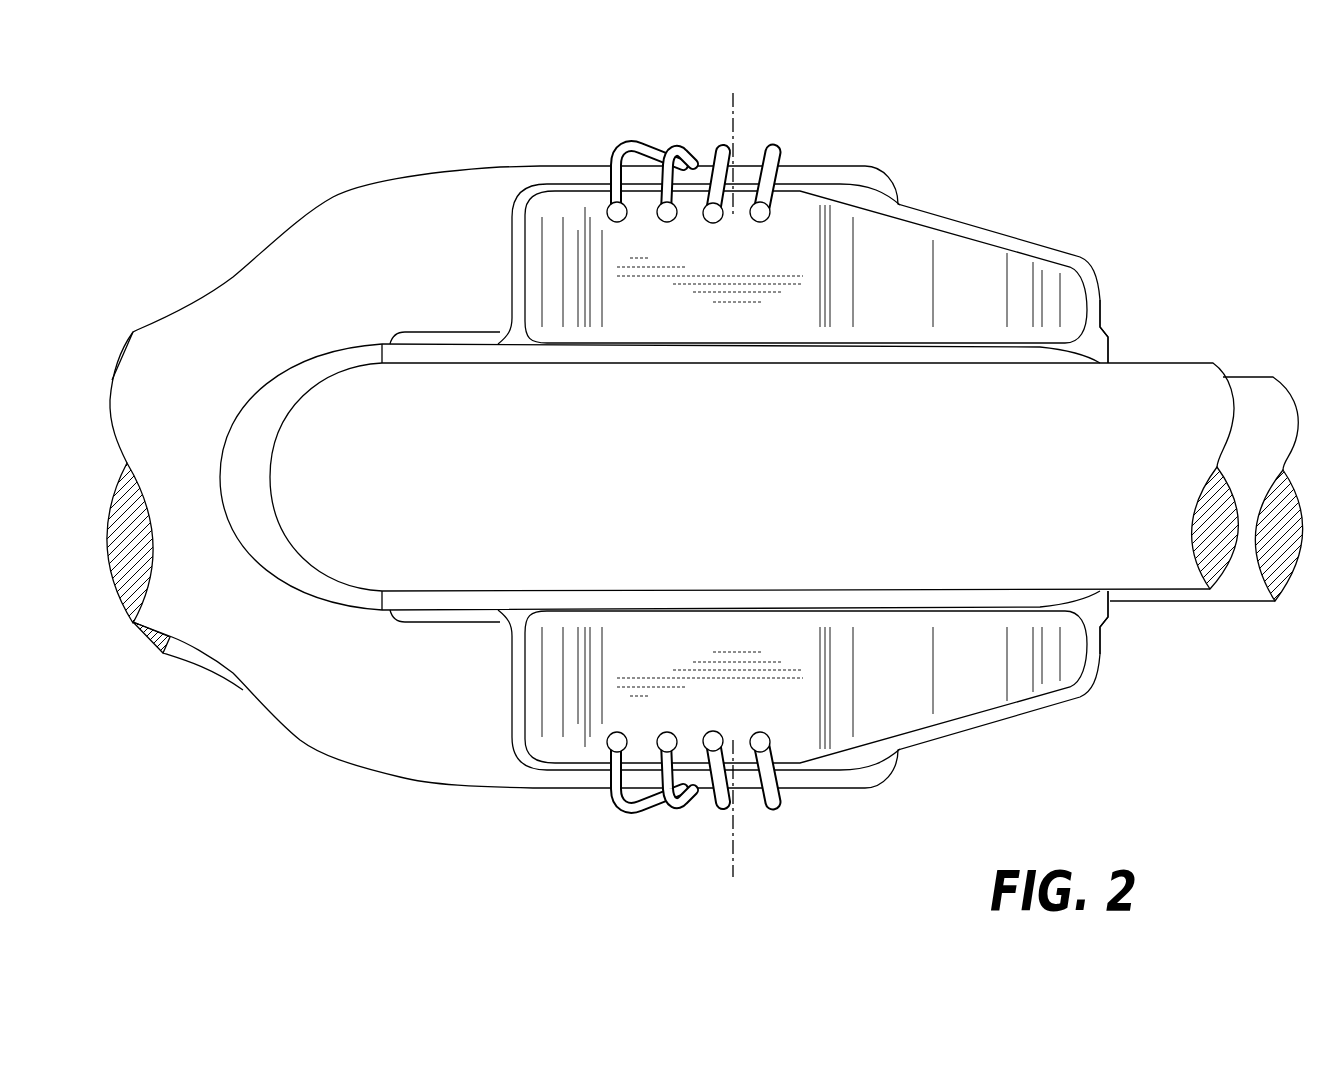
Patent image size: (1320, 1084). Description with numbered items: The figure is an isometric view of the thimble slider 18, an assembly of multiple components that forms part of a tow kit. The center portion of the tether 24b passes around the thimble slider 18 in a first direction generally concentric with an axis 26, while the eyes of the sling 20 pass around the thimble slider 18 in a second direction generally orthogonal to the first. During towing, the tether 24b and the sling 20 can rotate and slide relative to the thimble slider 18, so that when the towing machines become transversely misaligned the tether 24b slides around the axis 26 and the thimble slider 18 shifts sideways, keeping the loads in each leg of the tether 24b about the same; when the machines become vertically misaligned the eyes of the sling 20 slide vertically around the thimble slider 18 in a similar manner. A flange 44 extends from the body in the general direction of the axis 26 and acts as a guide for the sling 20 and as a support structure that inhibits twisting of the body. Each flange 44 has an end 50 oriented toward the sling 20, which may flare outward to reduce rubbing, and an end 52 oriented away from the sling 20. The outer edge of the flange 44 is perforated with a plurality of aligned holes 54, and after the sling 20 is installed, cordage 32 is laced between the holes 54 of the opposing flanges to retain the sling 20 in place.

The thimble slider 18 is at (1086, 195).
The sling 20 is at (396, 249).
The tether 24b is at (1162, 432).
The axis 26 is at (735, 112).
The cordage 32 is at (652, 150).
The flange 44 is at (977, 253).
The end 50 is at (513, 285).
The end 52 is at (1102, 303).
The holes 54 is at (716, 221).